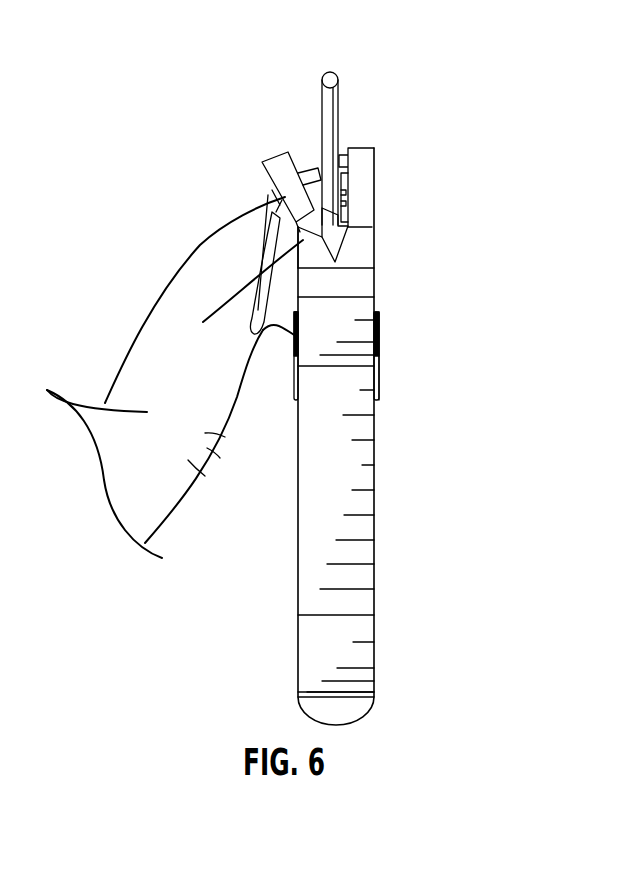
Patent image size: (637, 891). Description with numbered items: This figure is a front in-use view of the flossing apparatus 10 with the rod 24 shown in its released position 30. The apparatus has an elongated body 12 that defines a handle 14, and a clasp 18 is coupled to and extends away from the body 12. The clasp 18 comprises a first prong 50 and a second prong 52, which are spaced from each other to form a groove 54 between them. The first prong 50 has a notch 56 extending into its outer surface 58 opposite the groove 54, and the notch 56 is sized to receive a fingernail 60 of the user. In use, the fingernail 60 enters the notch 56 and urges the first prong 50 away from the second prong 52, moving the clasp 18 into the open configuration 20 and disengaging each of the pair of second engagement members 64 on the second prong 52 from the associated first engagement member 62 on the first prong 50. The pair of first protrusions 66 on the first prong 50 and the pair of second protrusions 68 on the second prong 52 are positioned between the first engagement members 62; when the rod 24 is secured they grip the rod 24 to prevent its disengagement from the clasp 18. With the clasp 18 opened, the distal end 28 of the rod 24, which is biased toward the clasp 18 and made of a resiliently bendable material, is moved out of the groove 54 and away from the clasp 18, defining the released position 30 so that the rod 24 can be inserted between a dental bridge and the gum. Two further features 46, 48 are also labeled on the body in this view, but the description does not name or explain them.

The flossing apparatus 10 is at (229, 40).
The body 12 is at (400, 638).
The handle 14 is at (312, 654).
The clasp 18 is at (394, 127).
The open configuration 20 is at (381, 186).
The rod 24 is at (336, 103).
The distal end 28 is at (331, 72).
The released position 30 is at (357, 69).
The right clip 46 is at (384, 347).
The clips 48 is at (296, 335).
The first prong 50 is at (277, 158).
The second prong 52 is at (377, 158).
The groove 54 is at (352, 236).
The notch 56 is at (263, 192).
The outer surface 58 is at (268, 184).
The fingernail 60 is at (299, 326).
The first engagement members 62 is at (245, 300).
The second engagement members 64 is at (356, 152).
The first protrusions 66 is at (271, 190).
The second protrusions 68 is at (345, 193).